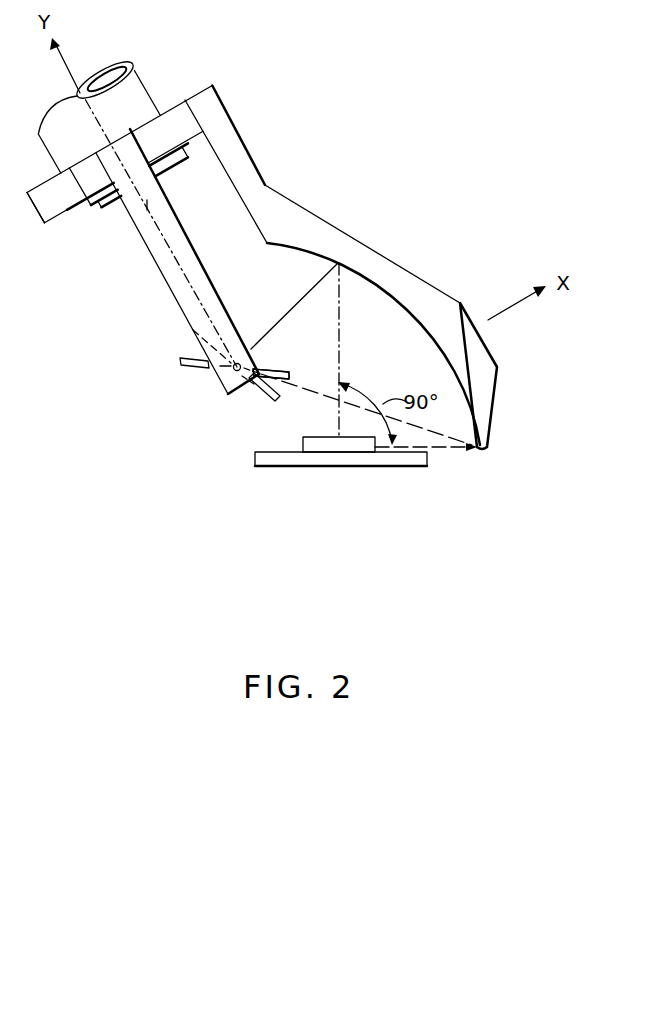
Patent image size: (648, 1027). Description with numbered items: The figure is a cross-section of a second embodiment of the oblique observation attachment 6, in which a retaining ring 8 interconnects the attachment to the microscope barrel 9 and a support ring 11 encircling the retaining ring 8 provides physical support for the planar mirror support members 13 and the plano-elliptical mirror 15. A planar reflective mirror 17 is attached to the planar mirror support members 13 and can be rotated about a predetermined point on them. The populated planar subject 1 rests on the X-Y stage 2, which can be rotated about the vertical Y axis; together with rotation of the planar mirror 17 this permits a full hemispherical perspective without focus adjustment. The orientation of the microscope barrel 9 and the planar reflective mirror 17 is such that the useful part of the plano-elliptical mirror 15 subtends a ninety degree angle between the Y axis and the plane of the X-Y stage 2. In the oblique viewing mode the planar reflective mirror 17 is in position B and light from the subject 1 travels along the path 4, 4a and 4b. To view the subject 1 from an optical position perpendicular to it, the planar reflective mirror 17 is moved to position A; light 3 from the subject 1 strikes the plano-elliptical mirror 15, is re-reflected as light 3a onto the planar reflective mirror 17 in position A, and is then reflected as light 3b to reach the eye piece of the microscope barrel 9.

The populated planar subject 1 is at (313, 436).
The X-Y stage 2 is at (287, 467).
The light 3 is at (341, 327).
The light 3a is at (317, 284).
The light 3b is at (147, 205).
The optical path 4 is at (445, 449).
The optical path 4a is at (447, 437).
The optical path 4b is at (203, 267).
The oblique observation attachment 6 is at (392, 524).
The retaining ring 8 is at (75, 218).
The microscope barrel 9 is at (146, 84).
The support ring 11 is at (36, 214).
The planar mirror support members 13 is at (152, 263).
The plano-elliptical mirror 15 is at (391, 291).
The planar reflective mirror 17 is at (195, 370).
The position A is at (274, 362).
The position B is at (267, 405).